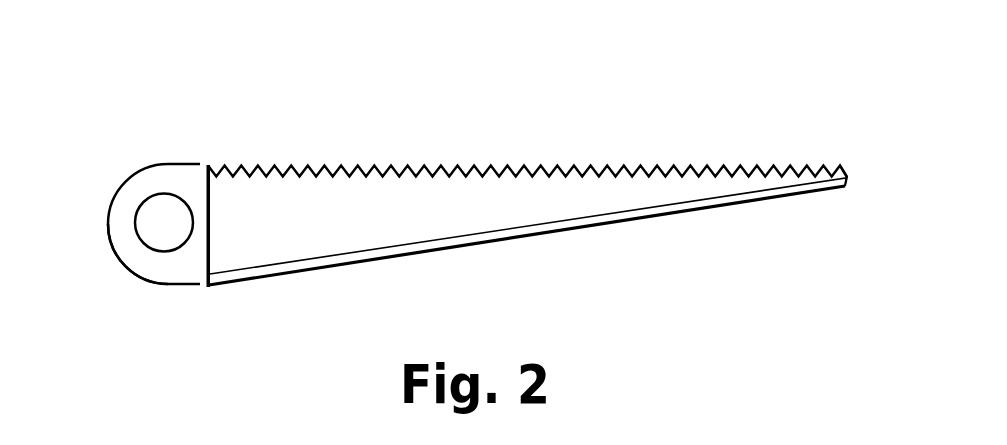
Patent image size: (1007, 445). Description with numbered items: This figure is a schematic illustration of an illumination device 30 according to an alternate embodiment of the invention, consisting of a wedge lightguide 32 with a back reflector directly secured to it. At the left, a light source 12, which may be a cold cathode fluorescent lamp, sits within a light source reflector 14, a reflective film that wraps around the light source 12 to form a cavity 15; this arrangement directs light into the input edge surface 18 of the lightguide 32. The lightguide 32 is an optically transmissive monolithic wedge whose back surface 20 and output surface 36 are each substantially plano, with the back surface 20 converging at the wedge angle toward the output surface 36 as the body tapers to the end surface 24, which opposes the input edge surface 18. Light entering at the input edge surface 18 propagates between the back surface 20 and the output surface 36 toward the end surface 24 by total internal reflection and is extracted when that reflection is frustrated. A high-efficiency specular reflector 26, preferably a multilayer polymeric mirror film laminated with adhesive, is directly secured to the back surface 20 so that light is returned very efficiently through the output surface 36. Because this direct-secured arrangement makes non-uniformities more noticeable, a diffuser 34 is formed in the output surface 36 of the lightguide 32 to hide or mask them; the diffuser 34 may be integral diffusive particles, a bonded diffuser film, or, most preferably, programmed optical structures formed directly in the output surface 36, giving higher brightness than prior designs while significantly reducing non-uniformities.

The light source 12 is at (167, 194).
The light source reflector 14 is at (132, 173).
The cavity 15 is at (147, 262).
The input edge surface 18 is at (207, 259).
The back surface 20 is at (387, 250).
The end surface 24 is at (848, 173).
The specular reflector 26 is at (585, 229).
The illumination device 30 is at (706, 101).
The lightguide 32 is at (446, 160).
The diffuser 34 is at (550, 168).
The output surface 36 is at (283, 164).